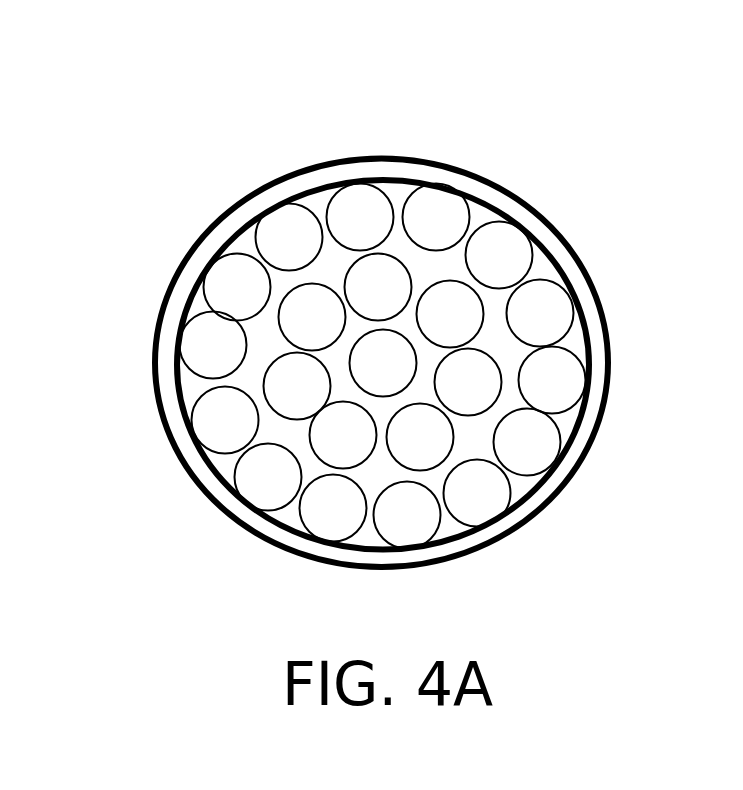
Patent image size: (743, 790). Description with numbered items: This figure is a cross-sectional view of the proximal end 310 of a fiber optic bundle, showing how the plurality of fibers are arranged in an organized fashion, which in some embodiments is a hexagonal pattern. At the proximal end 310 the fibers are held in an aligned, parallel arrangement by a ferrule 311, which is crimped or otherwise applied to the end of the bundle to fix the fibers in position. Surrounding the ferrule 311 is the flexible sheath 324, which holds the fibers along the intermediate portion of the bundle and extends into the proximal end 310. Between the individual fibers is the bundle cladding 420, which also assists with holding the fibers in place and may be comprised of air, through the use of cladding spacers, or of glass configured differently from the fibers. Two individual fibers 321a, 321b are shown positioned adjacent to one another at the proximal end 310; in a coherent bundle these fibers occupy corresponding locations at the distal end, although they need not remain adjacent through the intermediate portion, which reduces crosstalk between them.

The proximal end 310 is at (426, 311).
The ferrule 311 is at (381, 330).
The flexible sheath 324 is at (407, 365).
The bundle cladding 420 is at (370, 345).
The fiber 321a is at (601, 313).
The fiber 321b is at (609, 380).